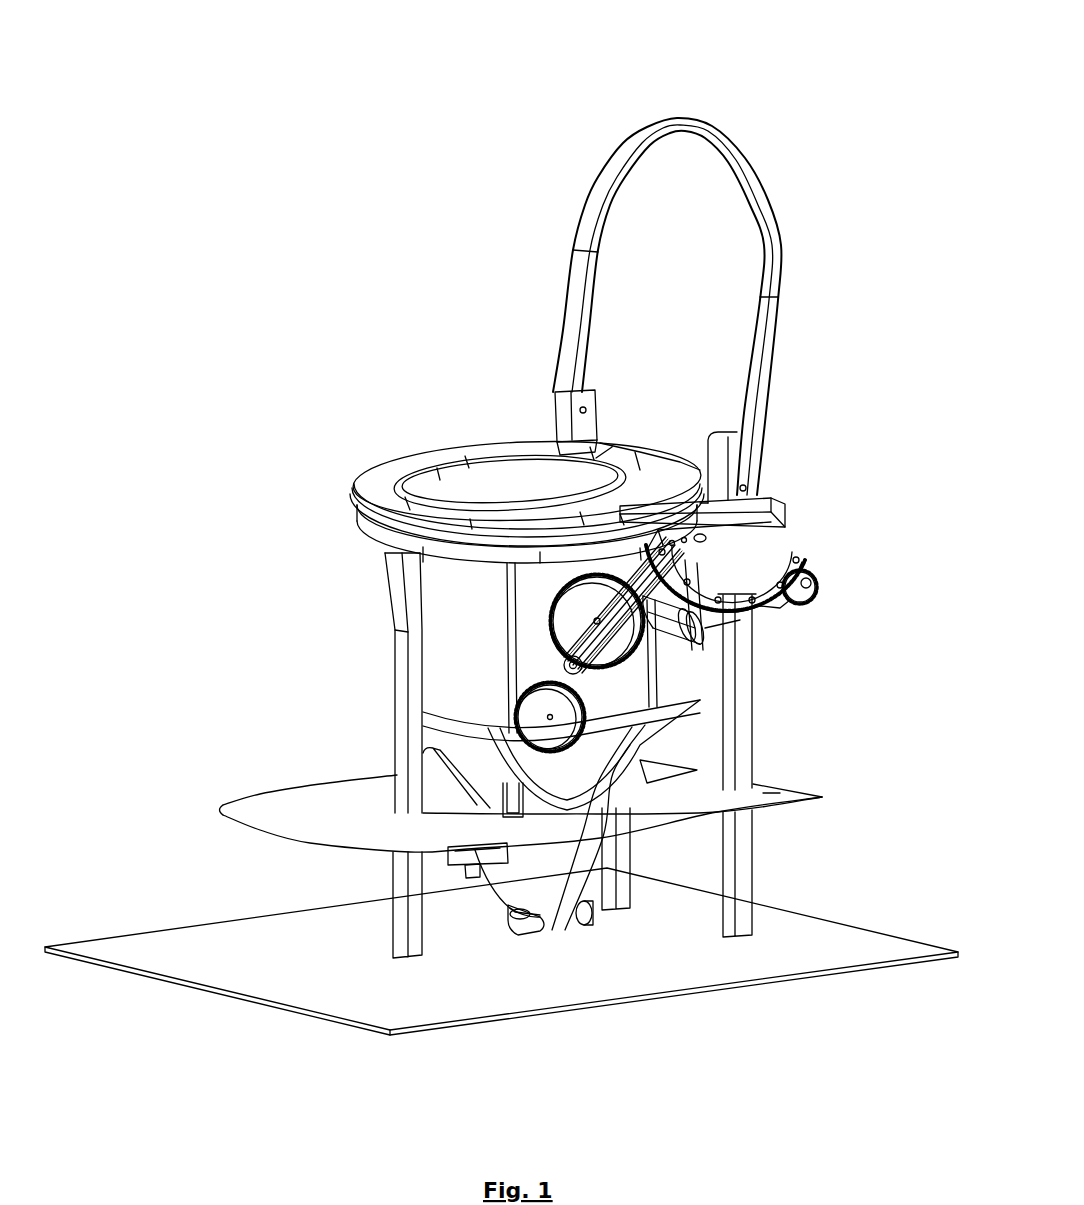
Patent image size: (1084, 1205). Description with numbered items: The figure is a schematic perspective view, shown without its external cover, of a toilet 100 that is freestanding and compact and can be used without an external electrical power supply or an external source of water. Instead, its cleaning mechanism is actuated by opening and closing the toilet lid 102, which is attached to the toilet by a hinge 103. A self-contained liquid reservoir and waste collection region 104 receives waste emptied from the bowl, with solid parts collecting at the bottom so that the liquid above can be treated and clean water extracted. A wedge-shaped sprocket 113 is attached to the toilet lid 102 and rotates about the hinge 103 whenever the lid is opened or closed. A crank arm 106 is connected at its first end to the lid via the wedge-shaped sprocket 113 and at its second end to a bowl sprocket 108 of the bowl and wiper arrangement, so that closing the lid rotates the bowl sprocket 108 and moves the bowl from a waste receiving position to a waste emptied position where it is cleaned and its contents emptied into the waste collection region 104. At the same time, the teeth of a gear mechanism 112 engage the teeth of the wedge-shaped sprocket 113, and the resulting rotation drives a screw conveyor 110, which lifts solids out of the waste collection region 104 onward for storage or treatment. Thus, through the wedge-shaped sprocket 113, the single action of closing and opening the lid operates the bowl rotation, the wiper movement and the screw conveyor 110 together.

The toilet 100 is at (284, 187).
The toilet lid 102 is at (743, 148).
The hinge 103 is at (743, 486).
The waste collection region 104 is at (540, 876).
The crank arm 106 is at (610, 632).
The bowl sprocket 108 is at (620, 700).
The screw conveyor 110 is at (586, 884).
The gear mechanism 112 is at (812, 567).
The wedge-shaped sprocket 113 is at (745, 640).